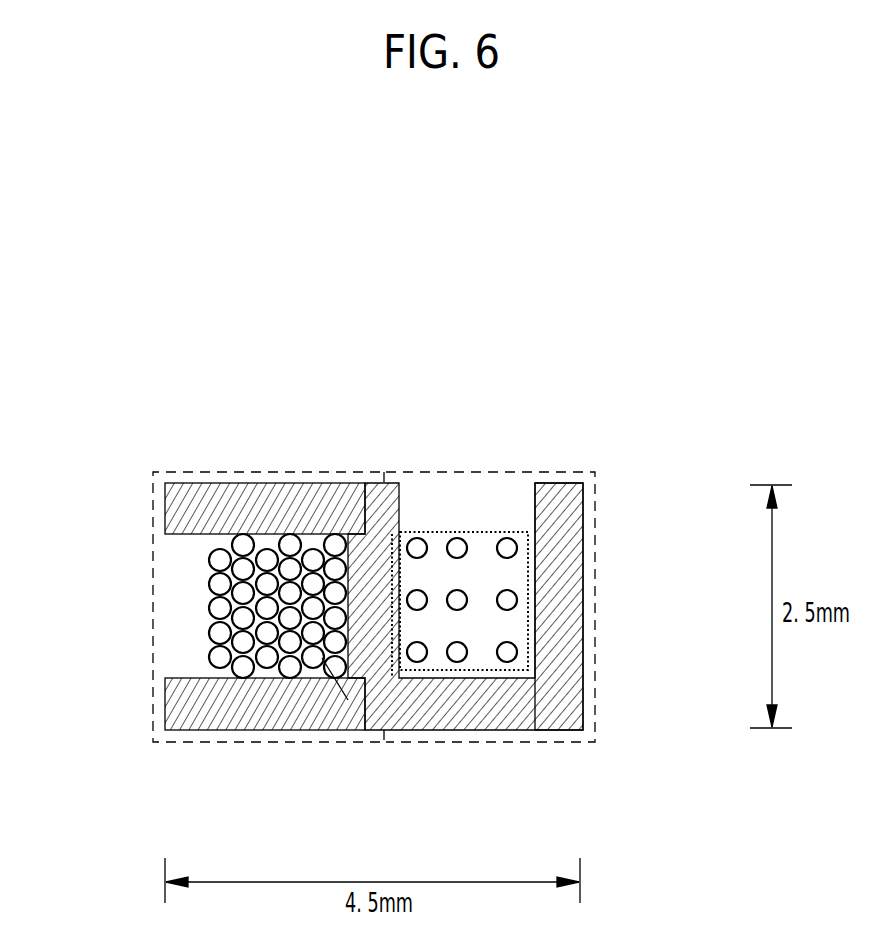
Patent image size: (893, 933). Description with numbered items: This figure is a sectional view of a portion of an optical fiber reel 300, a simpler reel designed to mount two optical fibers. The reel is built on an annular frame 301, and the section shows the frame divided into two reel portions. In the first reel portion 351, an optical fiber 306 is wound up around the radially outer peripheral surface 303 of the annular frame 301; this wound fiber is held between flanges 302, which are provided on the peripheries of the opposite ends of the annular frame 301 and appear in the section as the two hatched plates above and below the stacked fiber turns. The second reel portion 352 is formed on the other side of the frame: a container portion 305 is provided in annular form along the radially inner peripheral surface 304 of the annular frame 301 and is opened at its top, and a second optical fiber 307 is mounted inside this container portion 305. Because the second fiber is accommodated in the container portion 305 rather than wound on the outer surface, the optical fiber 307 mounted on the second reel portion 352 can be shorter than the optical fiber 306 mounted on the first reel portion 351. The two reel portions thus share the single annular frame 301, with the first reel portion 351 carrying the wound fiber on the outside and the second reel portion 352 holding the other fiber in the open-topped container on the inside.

The optical fiber reel 300 is at (364, 545).
The annular frame 301 is at (362, 540).
The flanges 302 is at (165, 503).
The radially outer peripheral surface 303 is at (348, 700).
The radially inner peripheral surface 304 is at (393, 581).
The container portion 305 is at (583, 593).
The optical fiber 306 is at (184, 614).
The optical fiber 307 is at (503, 531).
The first reel portion 351 is at (175, 745).
The second reel portion 352 is at (533, 745).